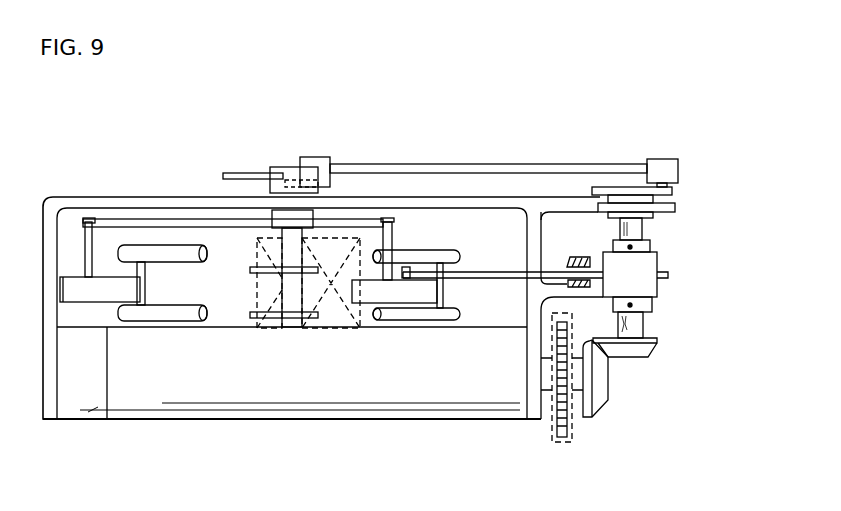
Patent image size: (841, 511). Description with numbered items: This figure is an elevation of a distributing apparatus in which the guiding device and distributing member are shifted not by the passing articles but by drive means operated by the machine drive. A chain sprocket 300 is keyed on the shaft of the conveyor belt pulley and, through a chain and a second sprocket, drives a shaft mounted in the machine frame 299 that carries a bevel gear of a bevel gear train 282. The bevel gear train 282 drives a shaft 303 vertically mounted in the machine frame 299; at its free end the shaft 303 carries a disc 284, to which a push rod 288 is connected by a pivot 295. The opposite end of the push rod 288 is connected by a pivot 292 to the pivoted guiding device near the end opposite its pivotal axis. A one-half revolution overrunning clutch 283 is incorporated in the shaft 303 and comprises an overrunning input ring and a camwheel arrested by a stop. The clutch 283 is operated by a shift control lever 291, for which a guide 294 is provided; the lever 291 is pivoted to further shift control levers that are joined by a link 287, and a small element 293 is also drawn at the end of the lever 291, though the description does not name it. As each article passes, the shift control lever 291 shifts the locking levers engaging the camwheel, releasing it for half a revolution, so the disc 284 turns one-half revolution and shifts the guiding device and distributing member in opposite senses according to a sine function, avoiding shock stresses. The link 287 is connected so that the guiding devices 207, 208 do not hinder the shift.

The guiding device 207 is at (180, 252).
The guiding device 208 is at (407, 252).
The bevel gear train 282 is at (637, 351).
The one-half revolution overrunning clutch 283 is at (645, 259).
The disc 284 is at (670, 191).
The link 287 is at (218, 222).
The push rod 288 is at (485, 171).
The shift control lever 291 is at (483, 273).
The pivot 292 is at (320, 164).
The pin 293 is at (404, 279).
The guide 294 is at (587, 257).
The pivot 295 is at (668, 173).
The machine frame 299 is at (49, 367).
The chain sprocket 300 is at (567, 425).
The shaft 303 is at (636, 327).